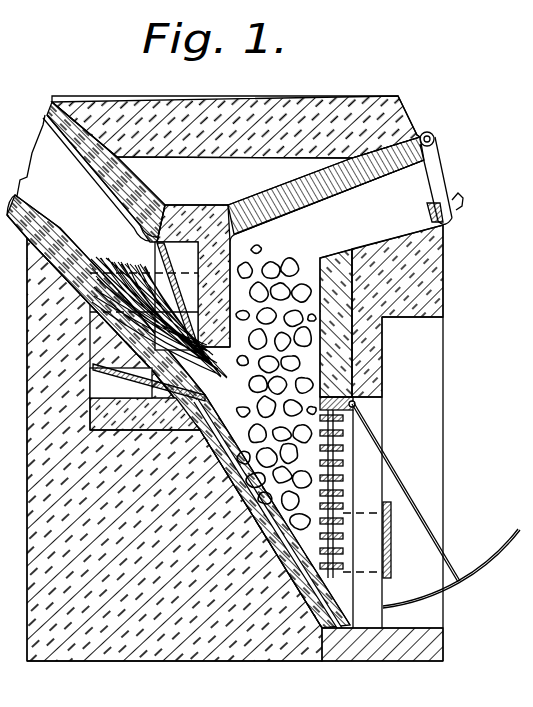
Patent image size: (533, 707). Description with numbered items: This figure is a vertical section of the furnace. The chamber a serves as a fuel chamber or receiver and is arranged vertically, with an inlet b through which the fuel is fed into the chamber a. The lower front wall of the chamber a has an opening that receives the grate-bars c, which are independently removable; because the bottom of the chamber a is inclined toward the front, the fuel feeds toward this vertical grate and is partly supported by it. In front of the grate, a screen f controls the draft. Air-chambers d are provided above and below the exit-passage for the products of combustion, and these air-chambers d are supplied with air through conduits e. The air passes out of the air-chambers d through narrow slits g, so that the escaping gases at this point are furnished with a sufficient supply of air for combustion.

The chamber a is at (276, 387).
The inlet b is at (326, 185).
The grate-bars c is at (344, 487).
The air-chambers d is at (144, 320).
The conduits e is at (144, 292).
The screen f is at (436, 505).
The slits g is at (159, 337).